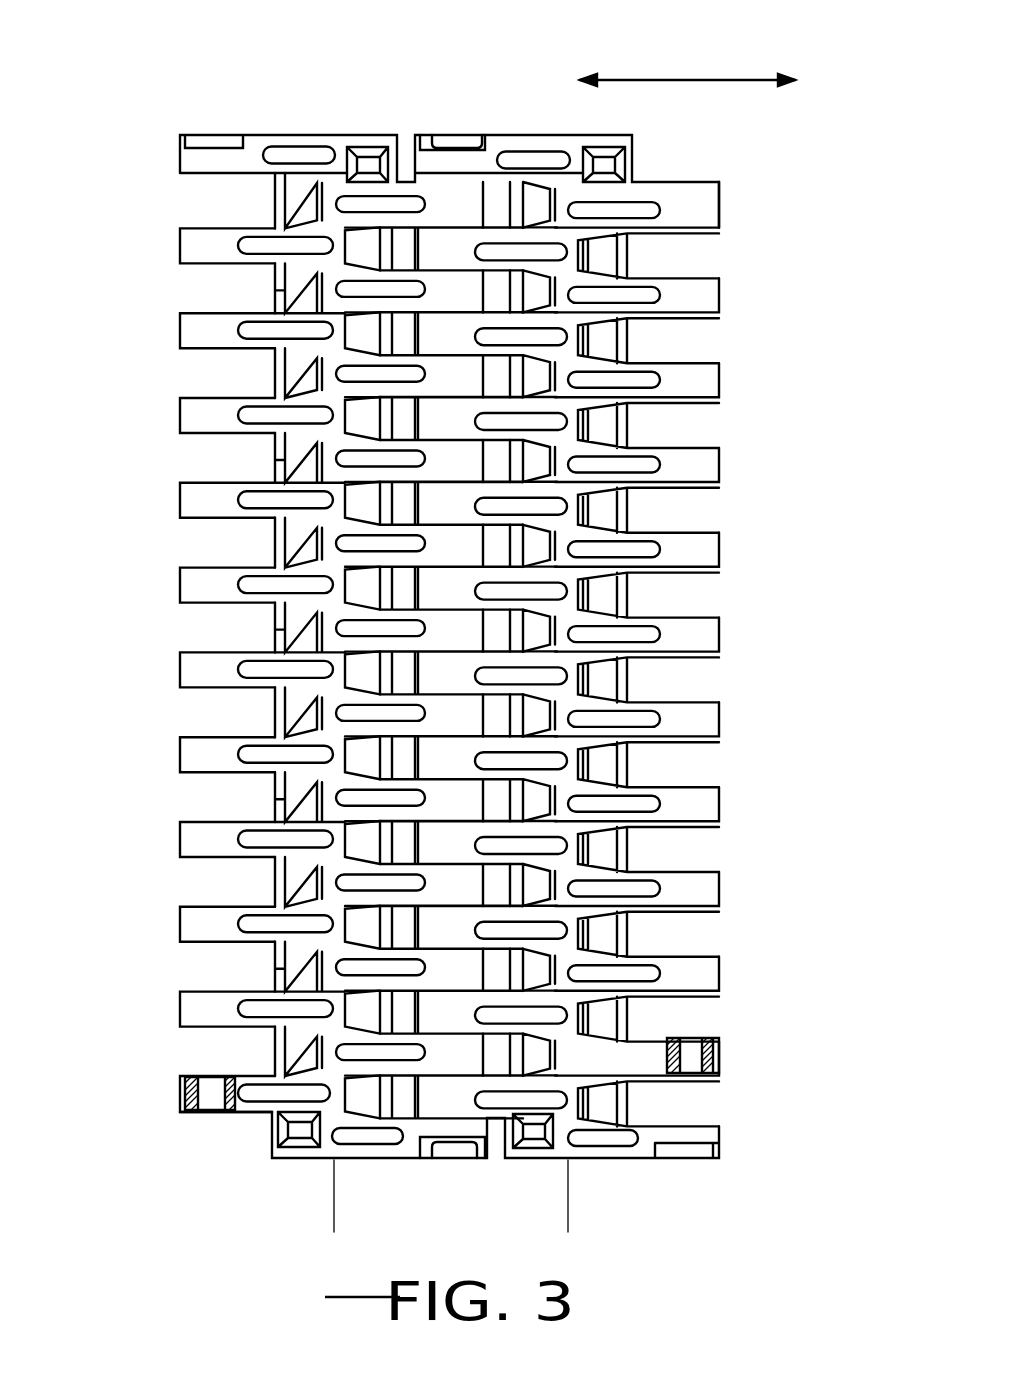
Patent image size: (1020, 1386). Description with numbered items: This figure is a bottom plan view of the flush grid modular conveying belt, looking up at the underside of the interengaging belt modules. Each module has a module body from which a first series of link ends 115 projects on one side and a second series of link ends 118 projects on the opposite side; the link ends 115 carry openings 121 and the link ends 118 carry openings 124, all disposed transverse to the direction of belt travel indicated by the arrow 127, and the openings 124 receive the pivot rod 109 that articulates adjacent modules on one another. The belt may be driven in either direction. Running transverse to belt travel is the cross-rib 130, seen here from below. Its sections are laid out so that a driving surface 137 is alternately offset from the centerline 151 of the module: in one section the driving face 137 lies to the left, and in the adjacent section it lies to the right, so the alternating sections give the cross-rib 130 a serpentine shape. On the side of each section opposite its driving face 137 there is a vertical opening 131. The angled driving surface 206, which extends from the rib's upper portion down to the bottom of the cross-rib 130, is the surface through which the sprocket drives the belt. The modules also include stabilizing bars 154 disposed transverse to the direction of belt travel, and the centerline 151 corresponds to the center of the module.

The pivot rod 109 is at (447, 1143).
The link end 115 is at (467, 167).
The link end 118 is at (703, 207).
The opening 121 is at (207, 1082).
The opening 124 is at (697, 1040).
The arrow 127 is at (688, 78).
The cross-rib 130 is at (332, 655).
The vertical opening 131 is at (299, 157).
The driving surface 137 is at (548, 472).
The centerline 151 is at (569, 1199).
The stabilizing bar 154 is at (273, 197).
The driving surface 206 is at (352, 757).